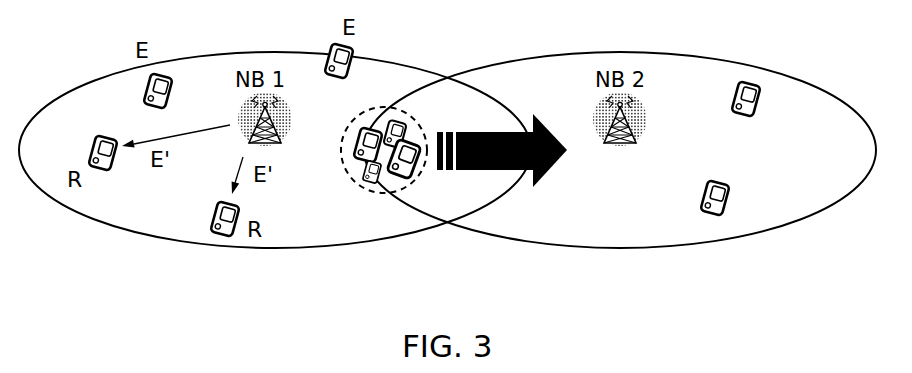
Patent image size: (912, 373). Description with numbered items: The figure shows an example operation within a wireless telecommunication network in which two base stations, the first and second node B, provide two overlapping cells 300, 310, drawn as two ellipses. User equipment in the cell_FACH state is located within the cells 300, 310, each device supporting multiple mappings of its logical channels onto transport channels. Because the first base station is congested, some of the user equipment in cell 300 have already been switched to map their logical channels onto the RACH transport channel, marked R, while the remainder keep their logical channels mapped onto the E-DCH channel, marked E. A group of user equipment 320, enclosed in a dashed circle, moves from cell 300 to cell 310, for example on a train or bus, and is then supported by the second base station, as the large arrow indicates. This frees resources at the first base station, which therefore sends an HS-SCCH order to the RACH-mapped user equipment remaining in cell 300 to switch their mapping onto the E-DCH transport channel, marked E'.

The cell 300 is at (273, 250).
The cell 310 is at (618, 248).
The group of user equipment 320 is at (378, 195).